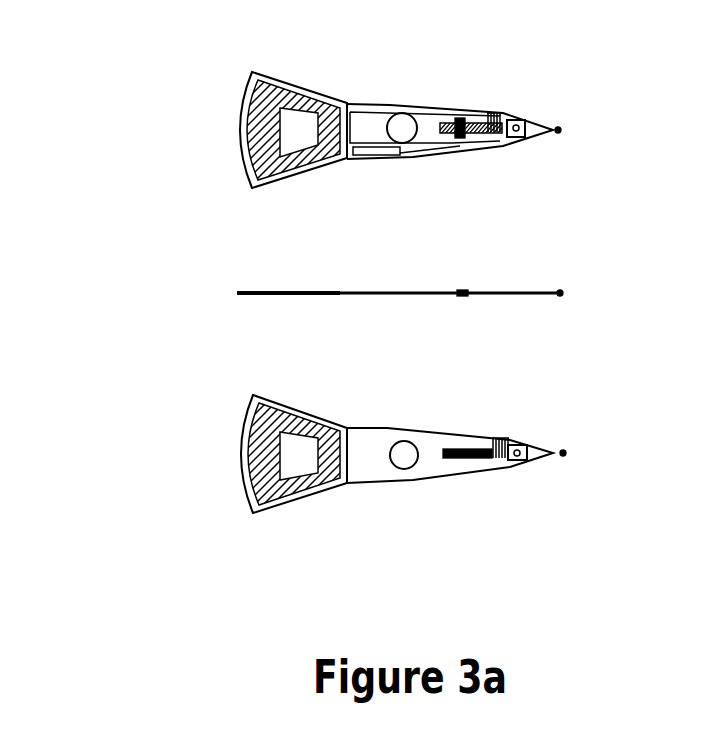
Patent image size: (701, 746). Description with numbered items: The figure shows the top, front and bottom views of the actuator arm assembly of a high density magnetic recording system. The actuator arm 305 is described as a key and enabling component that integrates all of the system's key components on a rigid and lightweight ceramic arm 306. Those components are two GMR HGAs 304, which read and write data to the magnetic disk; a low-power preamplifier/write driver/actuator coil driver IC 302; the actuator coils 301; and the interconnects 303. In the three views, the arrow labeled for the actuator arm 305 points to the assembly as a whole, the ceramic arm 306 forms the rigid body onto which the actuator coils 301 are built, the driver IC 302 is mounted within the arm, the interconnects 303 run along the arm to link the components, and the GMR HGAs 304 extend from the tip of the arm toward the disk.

The actuator coils 301 is at (280, 90).
The low-power preamplifier/write driver/actuator coil driver IC 302 is at (462, 125).
The interconnects 303 is at (470, 127).
The GMR HGAs 304 is at (608, 453).
The actuator arm 305 is at (210, 455).
The ceramic arm 306 is at (295, 177).